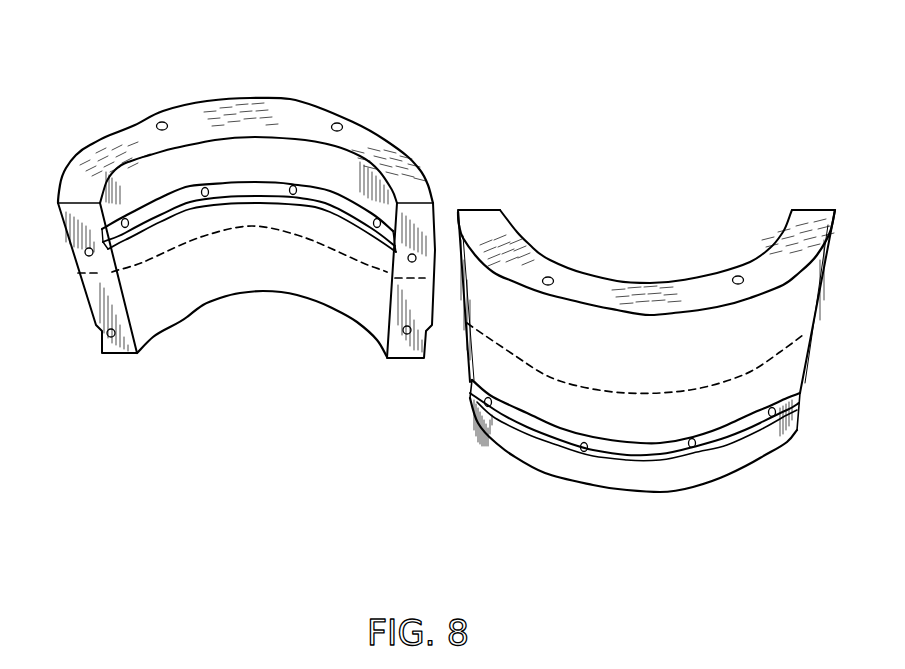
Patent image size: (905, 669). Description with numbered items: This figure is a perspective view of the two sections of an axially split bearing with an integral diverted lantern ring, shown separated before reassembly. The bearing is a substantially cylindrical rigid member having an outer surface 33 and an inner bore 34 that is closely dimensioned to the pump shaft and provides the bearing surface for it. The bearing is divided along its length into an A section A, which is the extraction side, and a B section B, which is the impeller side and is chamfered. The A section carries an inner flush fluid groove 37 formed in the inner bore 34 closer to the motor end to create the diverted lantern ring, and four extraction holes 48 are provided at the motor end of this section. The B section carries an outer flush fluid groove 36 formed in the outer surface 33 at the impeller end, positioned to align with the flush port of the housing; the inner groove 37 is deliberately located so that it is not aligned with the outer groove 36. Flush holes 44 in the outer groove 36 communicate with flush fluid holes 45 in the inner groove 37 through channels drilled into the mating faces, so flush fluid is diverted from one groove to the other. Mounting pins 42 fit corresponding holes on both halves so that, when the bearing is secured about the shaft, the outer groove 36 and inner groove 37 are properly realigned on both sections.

The outer surface 33 is at (635, 381).
The inner bore 34 is at (244, 271).
The outer flush fluid groove 36 is at (798, 394).
The inner flush fluid groove 37 is at (365, 215).
The mounting pins 42 is at (86, 256).
The flush holes 44 is at (587, 452).
The flush fluid holes 45 is at (203, 187).
The extraction holes 48 is at (157, 124).
The A section A is at (250, 102).
The B section B is at (265, 294).